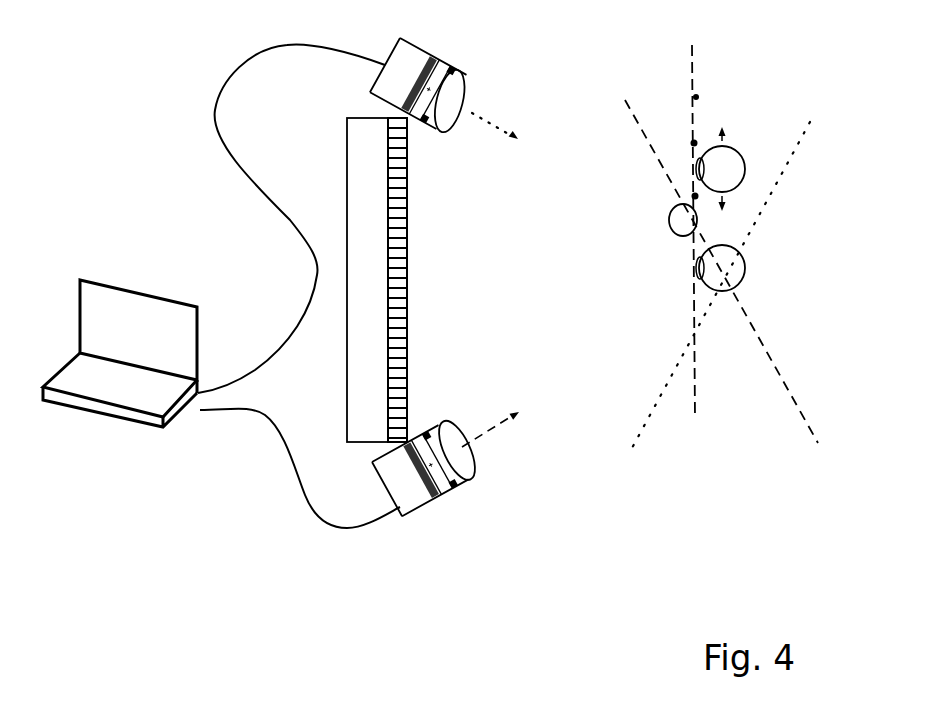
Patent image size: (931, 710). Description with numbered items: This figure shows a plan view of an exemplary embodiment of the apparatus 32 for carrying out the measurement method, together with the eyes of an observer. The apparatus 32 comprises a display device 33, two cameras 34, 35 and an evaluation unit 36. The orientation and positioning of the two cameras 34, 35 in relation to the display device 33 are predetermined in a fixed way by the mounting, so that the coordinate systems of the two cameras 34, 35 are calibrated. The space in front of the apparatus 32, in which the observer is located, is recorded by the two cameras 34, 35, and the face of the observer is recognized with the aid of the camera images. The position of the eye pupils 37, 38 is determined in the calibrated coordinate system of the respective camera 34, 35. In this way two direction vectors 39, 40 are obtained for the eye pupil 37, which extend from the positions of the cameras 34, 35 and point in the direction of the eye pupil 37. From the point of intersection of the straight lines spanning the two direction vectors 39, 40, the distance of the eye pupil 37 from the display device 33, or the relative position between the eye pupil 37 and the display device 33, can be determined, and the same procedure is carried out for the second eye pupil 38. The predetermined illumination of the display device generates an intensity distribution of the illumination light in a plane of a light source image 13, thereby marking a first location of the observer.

The light source image 13 is at (693, 127).
The apparatus 32 is at (552, 563).
The display device 33 is at (347, 170).
The first camera 34 is at (431, 52).
The second camera 35 is at (428, 503).
The evaluation unit 36 is at (102, 285).
The eye pupil 37 is at (722, 272).
The eye pupil 38 is at (720, 173).
The first direction vector 39 is at (496, 138).
The second direction vector 40 is at (493, 435).